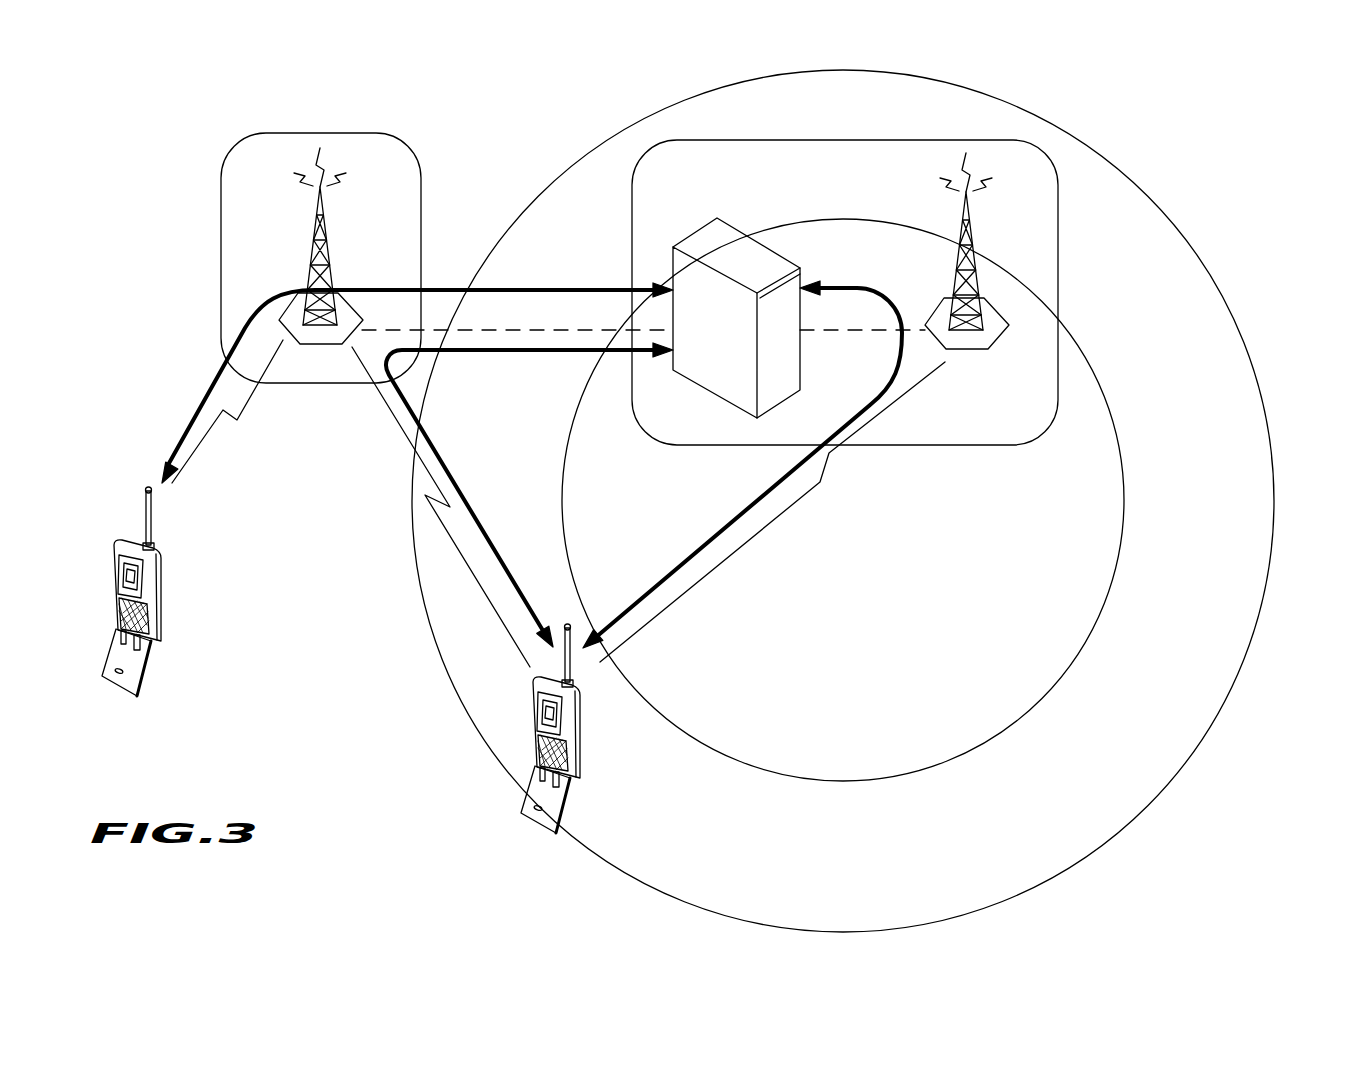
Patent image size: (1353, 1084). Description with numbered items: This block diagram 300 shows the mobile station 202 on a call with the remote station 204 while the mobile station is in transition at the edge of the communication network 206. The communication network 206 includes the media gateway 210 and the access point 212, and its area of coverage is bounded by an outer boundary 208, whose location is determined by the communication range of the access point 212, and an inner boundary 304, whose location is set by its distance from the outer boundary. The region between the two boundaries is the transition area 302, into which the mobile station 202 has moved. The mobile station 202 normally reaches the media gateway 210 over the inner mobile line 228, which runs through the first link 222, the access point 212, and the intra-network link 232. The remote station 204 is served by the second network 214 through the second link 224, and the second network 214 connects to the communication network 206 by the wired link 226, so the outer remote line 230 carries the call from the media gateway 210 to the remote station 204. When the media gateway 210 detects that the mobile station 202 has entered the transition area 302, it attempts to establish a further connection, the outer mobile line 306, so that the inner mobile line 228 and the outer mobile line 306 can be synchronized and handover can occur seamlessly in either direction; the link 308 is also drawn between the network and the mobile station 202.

The mobile station 202 is at (581, 753).
The remote station 204 is at (159, 593).
The communication network 206 is at (1058, 223).
The outer boundary 208 is at (1145, 193).
The media gateway 210 is at (723, 403).
The access point 212 is at (942, 303).
The second network 214 is at (320, 132).
The first link 222 is at (803, 498).
The second link 224 is at (237, 422).
The wired link 226 is at (481, 327).
The inner mobile line 228 is at (743, 505).
The outer remote line 230 is at (195, 428).
The intra-network link 232 is at (818, 332).
The block diagram 300 is at (168, 127).
The transition area 302 is at (1208, 328).
The inner boundary 304 is at (1070, 335).
The outer mobile line 306 is at (460, 483).
The wireless link 308 is at (400, 437).